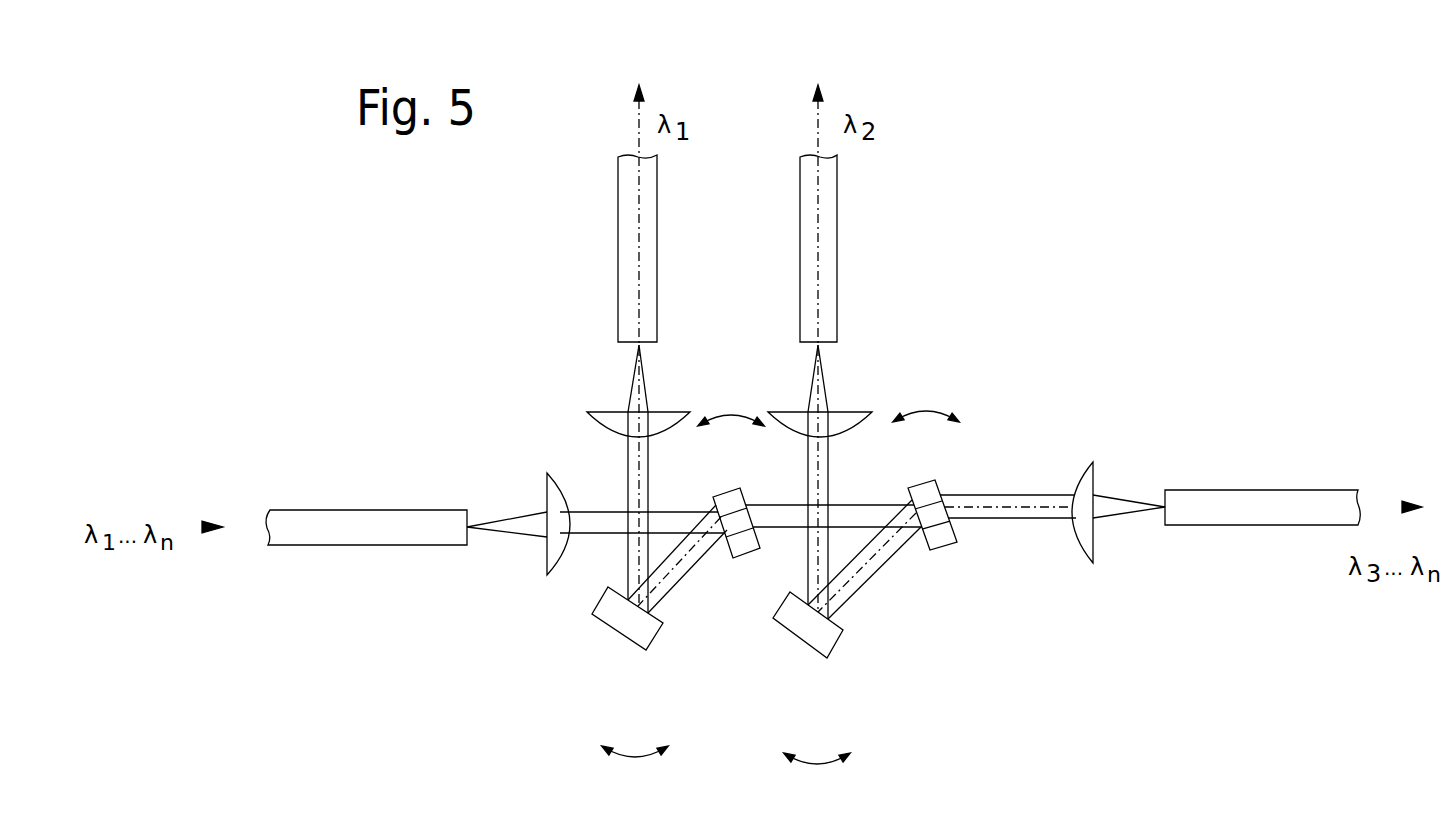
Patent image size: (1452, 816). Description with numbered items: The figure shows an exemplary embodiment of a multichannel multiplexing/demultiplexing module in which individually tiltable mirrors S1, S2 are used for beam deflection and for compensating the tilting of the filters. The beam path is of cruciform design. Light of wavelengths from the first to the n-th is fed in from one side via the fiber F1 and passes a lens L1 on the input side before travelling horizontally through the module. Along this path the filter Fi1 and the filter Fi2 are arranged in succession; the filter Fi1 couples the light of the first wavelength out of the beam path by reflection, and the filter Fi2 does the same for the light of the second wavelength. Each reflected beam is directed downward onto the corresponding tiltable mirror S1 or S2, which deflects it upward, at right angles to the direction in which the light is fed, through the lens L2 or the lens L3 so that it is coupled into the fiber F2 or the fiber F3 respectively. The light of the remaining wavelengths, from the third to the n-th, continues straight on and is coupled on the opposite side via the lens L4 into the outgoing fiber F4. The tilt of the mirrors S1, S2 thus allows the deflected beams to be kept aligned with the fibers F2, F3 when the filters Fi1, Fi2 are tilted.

The fiber F1 is at (366, 541).
The fiber F2 is at (612, 248).
The fiber F3 is at (842, 248).
The outgoing fiber F4 is at (1262, 489).
The collimating lens L1 is at (546, 545).
The lens L2 is at (629, 403).
The lens L3 is at (820, 401).
The focusing lens L4 is at (1086, 489).
The filter Fi1 is at (731, 486).
The filter Fi2 is at (926, 480).
The individually tiltable mirror S1 is at (630, 672).
The individually tiltable mirror S2 is at (811, 678).